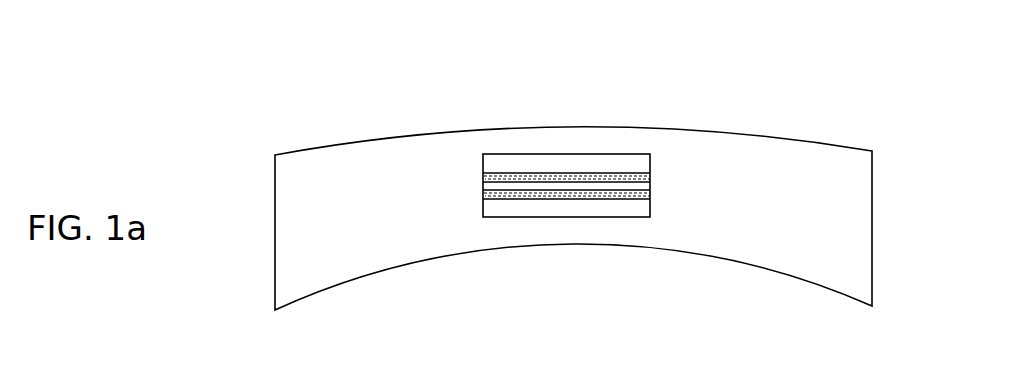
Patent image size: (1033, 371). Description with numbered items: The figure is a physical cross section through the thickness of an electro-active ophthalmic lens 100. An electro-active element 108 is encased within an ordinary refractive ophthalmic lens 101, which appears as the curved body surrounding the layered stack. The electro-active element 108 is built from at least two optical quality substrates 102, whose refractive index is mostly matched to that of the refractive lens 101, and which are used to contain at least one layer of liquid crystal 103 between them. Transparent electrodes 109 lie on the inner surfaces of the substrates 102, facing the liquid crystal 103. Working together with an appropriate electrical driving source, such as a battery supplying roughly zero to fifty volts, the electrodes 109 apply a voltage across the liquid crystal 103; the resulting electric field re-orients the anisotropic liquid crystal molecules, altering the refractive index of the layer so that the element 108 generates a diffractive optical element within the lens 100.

The electro-active ophthalmic lens 100 is at (386, 48).
The refractive ophthalmic lens 101 is at (312, 147).
The optical quality substrates 102 is at (495, 160).
The liquid crystal 103 is at (634, 184).
The electro-active element 108 is at (660, 152).
The transparent electrodes 109 is at (578, 178).